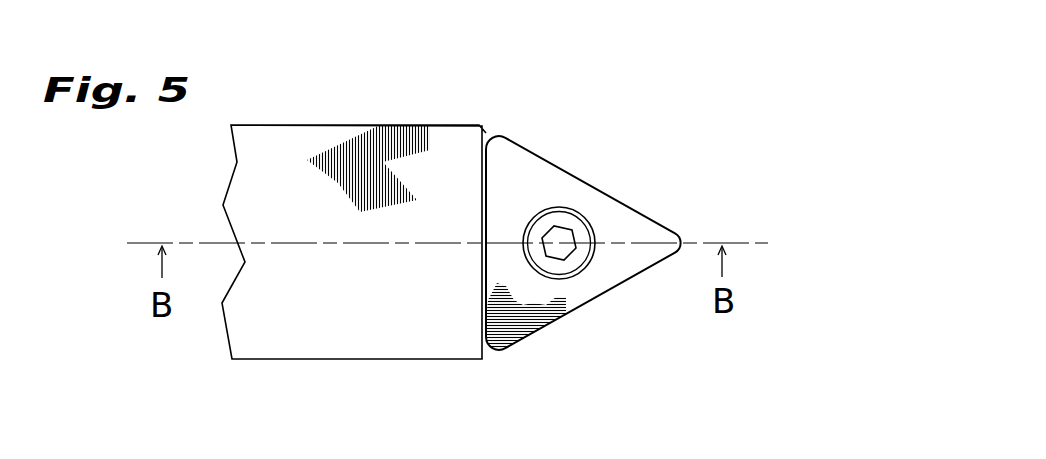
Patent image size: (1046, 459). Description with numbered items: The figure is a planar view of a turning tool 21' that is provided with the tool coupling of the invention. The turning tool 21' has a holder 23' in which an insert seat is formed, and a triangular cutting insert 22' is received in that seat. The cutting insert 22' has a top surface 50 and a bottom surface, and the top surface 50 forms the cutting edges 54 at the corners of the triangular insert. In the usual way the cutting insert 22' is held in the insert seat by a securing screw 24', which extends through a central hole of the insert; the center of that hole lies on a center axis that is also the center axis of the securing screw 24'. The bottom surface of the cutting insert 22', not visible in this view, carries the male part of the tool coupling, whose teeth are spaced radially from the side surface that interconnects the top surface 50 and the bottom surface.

The turning tool 21' is at (514, 42).
The cutting insert 22' is at (614, 229).
The holder 23' is at (354, 197).
The securing screw 24' is at (608, 298).
The top surface 50 is at (527, 162).
The cutting edges 54 is at (647, 208).